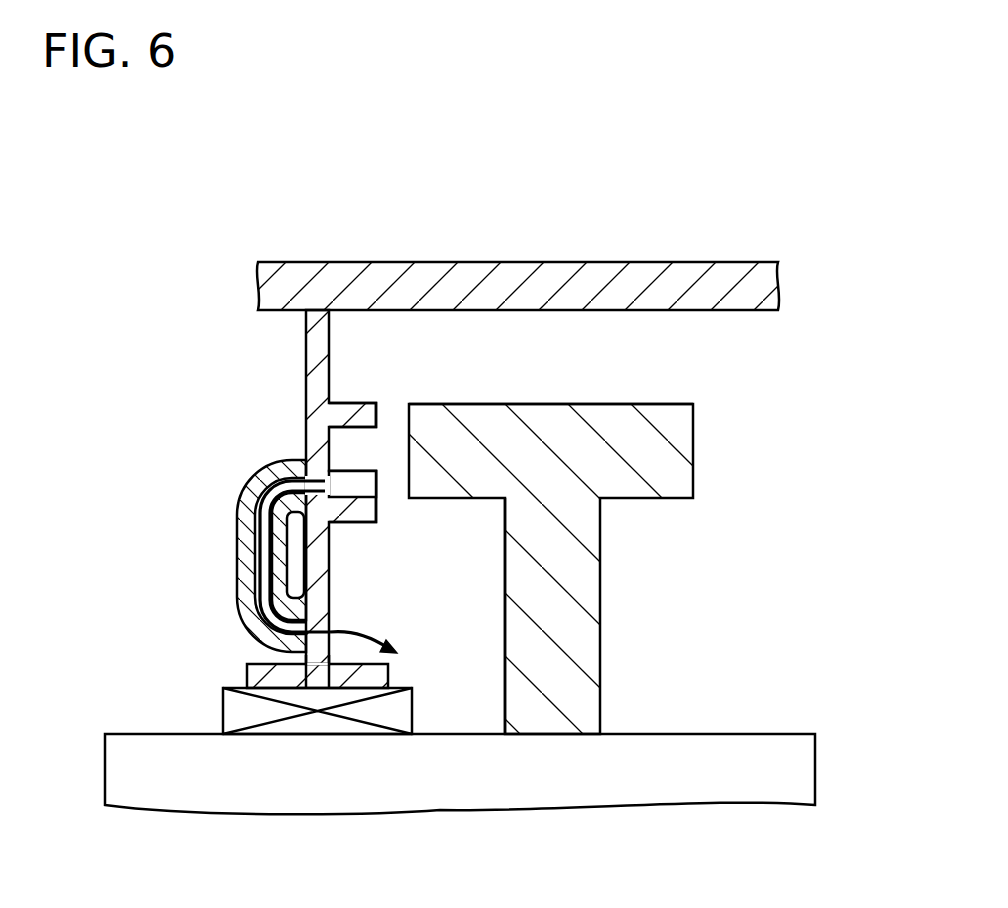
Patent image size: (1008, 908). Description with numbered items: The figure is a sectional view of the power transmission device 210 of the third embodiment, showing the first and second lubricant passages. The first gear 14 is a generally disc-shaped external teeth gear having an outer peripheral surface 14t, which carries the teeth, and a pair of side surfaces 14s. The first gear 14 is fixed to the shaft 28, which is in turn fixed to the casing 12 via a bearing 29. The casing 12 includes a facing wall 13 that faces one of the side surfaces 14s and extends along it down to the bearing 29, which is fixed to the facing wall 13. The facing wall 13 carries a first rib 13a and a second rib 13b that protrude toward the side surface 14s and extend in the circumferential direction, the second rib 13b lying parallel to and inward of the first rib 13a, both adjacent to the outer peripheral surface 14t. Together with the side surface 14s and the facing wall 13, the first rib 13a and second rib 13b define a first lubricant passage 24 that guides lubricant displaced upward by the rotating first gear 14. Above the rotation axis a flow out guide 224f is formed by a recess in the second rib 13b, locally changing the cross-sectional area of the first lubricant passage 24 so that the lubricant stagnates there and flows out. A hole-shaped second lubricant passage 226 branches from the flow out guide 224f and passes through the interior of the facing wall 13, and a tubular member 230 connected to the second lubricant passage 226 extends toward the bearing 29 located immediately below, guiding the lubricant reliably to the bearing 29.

The casing 12 is at (690, 273).
The facing wall 13 is at (473, 439).
The first rib 13a is at (350, 403).
The second rib 13b is at (353, 468).
The first gear 14 is at (632, 531).
The outer peripheral surface 14t is at (672, 403).
The side surfaces 14s is at (505, 630).
The first lubricant passage 24 is at (362, 447).
The flow out guide 224f is at (368, 497).
The second lubricant passage 226 is at (321, 484).
The shaft 28 is at (174, 800).
The bearing 29 is at (222, 712).
The power transmission device 210 is at (780, 238).
The tubular member 230 is at (237, 543).